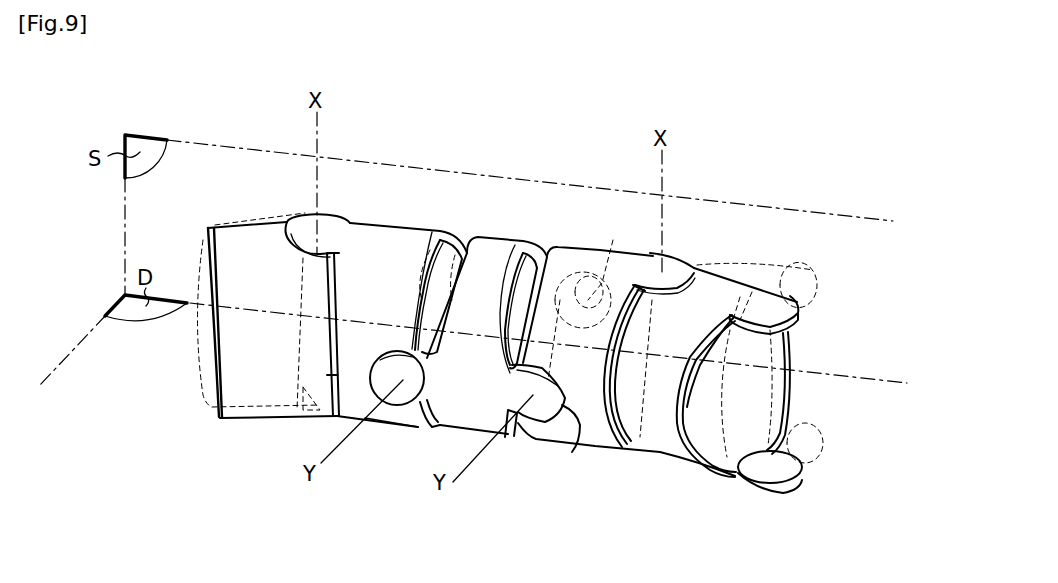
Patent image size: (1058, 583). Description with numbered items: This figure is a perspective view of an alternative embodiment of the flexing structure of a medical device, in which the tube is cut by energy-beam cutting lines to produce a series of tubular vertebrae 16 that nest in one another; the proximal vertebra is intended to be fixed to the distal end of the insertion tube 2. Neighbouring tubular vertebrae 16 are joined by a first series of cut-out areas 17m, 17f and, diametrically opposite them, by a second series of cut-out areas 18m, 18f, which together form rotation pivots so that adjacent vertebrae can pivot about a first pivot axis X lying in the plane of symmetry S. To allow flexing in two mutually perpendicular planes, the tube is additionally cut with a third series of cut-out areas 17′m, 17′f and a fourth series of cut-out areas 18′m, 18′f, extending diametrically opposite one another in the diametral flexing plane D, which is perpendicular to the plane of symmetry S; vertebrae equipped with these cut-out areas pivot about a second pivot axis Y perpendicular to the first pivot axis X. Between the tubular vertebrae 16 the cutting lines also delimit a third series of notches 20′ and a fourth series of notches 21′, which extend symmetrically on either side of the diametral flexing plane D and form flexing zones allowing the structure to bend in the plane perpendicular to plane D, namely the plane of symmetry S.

The insertion tube 2 is at (233, 240).
The tubular vertebrae 16 is at (389, 254).
The cut-out area of the first series 17m is at (307, 237).
The cut-out area of the third series 17′m is at (420, 257).
The notch of the third series 20′ is at (523, 242).
The cut-out area of the third series 17′f is at (607, 273).
The cut-out area of the first series 17f is at (697, 277).
The cut-out area of the fourth series 18′m is at (533, 390).
The notch of the fourth series 21′ is at (517, 430).
The cut-out area of the fourth series 18′f is at (568, 405).
The cut-out area of the second series 18f is at (683, 470).
The cut-out area of the second series 18m is at (773, 490).